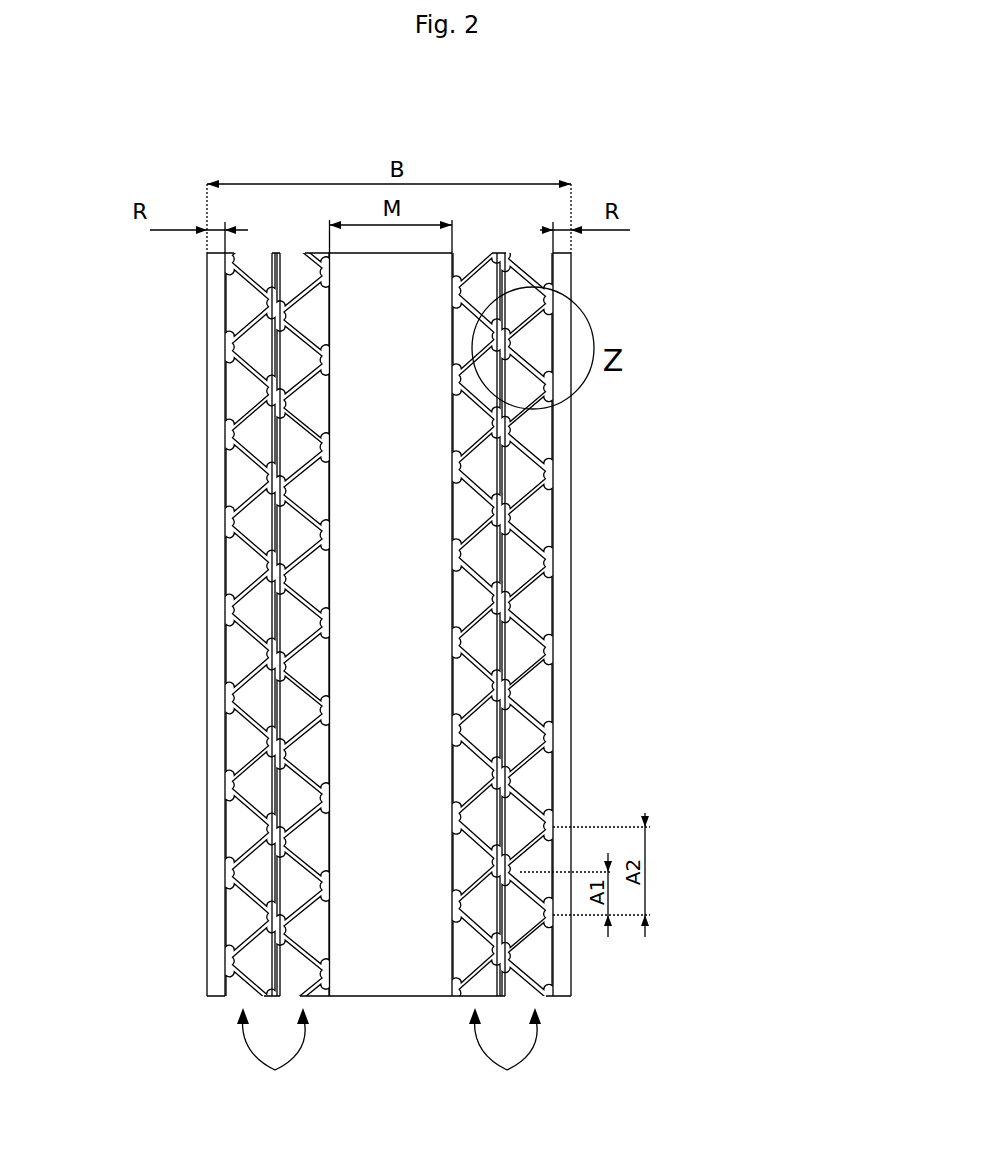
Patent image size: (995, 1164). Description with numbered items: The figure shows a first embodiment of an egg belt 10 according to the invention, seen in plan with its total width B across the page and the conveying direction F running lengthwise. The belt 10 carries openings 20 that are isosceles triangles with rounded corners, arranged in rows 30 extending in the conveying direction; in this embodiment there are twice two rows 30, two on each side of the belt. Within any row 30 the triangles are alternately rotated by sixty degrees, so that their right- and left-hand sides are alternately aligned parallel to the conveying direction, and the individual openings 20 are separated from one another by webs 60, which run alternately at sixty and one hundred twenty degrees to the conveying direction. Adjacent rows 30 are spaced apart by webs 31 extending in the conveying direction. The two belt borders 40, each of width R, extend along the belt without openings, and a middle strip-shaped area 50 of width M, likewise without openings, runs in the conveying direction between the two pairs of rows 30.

The egg belt 10 is at (597, 139).
The openings 20 is at (533, 525).
The rows 30 is at (389, 1055).
The webs 31 is at (280, 835).
The belt borders 40 is at (217, 657).
The middle strip-shaped area 50 is at (370, 607).
The webs 60 is at (242, 503).